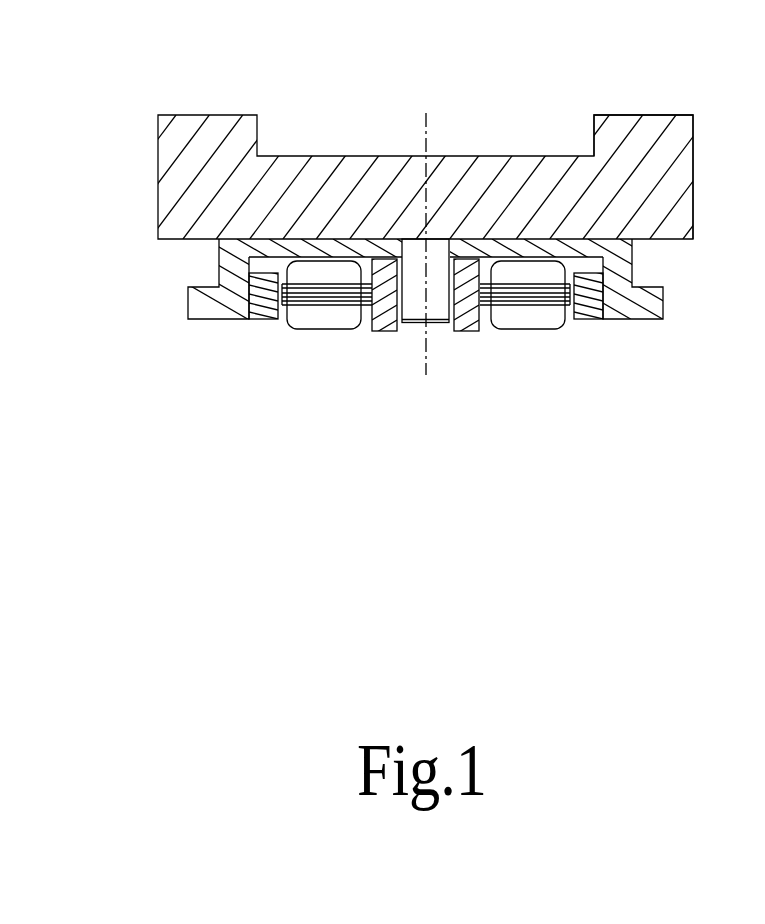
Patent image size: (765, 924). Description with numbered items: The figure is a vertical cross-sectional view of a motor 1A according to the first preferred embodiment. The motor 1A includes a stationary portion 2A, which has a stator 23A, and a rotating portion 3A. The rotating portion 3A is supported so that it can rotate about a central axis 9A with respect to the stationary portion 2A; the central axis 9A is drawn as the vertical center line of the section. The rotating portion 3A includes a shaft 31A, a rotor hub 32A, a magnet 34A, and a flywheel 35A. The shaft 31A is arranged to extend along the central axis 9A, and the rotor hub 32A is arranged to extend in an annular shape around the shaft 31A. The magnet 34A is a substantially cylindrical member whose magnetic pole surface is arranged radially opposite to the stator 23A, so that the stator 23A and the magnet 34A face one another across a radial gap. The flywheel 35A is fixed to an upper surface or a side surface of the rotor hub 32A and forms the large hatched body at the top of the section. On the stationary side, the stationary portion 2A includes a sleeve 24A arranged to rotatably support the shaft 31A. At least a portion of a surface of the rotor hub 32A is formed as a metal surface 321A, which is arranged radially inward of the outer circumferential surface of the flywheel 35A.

The motor 1A is at (98, 34).
The stationary portion 2A is at (434, 280).
The rotating portion 3A is at (228, 106).
The central axis 9A is at (425, 144).
The stator 23A is at (510, 290).
The sleeve 24A is at (457, 318).
The shaft 31A is at (412, 290).
The rotor hub 32A is at (552, 247).
The metal surface 321A is at (616, 290).
The magnet 34A is at (268, 293).
The flywheel 35A is at (658, 185).